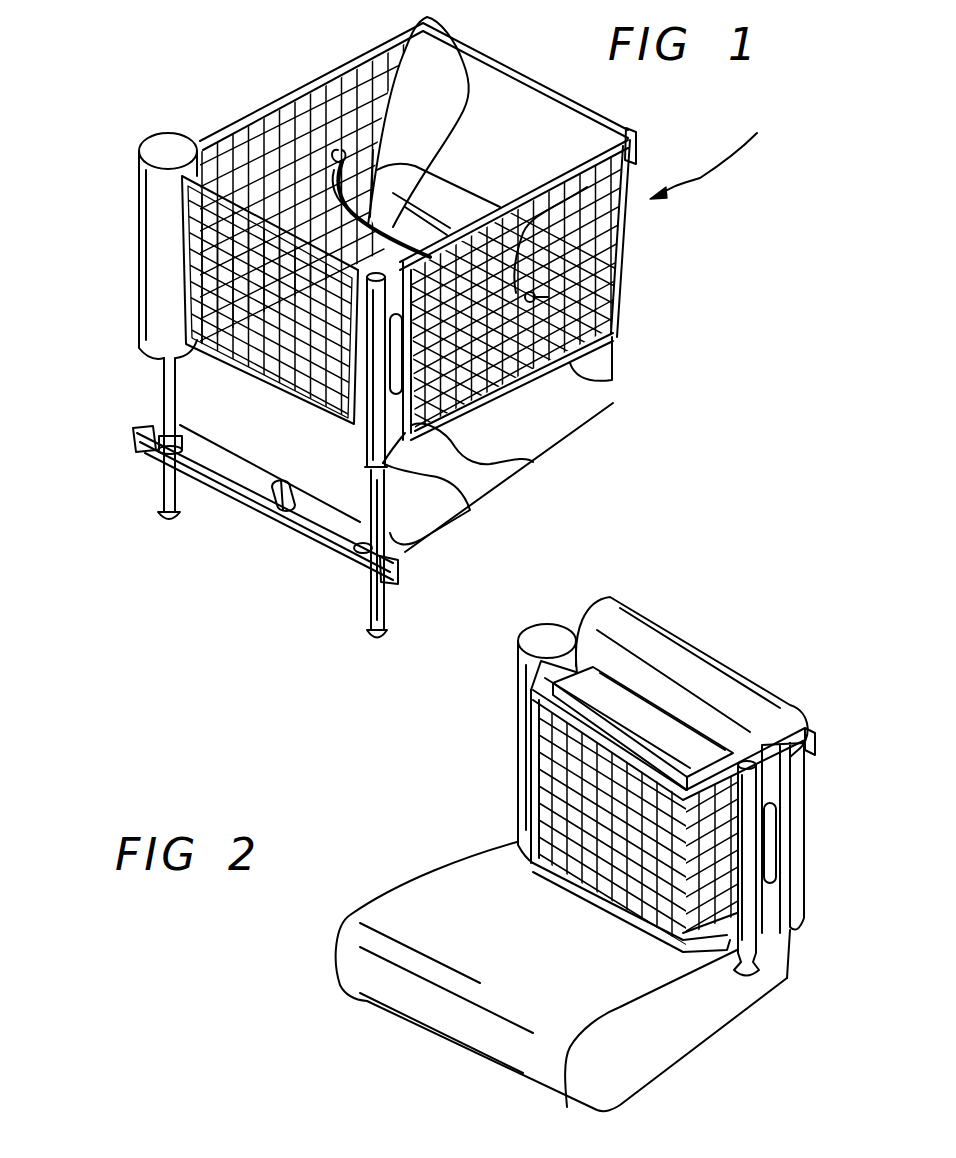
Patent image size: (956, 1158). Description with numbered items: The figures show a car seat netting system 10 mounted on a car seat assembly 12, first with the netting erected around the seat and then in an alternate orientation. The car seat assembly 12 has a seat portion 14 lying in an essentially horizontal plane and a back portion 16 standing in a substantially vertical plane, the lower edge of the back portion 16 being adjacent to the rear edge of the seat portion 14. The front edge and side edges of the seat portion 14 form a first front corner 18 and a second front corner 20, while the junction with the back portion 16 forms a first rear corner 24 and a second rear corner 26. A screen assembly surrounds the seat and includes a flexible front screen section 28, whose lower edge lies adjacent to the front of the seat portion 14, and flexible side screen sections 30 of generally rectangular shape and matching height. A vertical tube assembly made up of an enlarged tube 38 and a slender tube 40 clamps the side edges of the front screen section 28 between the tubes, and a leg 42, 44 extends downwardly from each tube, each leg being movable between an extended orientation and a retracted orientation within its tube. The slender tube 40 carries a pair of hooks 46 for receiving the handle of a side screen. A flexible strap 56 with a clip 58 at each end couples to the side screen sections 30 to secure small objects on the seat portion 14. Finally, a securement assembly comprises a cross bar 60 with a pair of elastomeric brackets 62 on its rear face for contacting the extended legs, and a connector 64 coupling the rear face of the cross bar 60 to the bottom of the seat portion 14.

In FIG. 1, the car seat netting system 10 is at (723, 157).
In FIG. 2, the car seat assembly 12 is at (784, 978).
In FIG. 2, the seat portion 14 is at (698, 1030).
In FIG. 2, the back portion 16 is at (755, 800).
In FIG. 2, the first front corner 18 is at (562, 810).
In FIG. 2, the second front corner 20 is at (560, 1090).
In FIG. 1, the first rear corner 24 is at (320, 228).
In FIG. 1, the second rear corner 26 is at (612, 381).
In FIG. 1, the front screen section 28 is at (200, 142).
In FIG. 1, the side screen sections 30 is at (398, 92).
In FIG. 1, the enlarged tube 38 is at (163, 217).
In FIG. 2, the enlarged tube 38 is at (525, 670).
In FIG. 1, the slender tube 40 is at (470, 503).
In FIG. 2, the slender tube 40 is at (747, 790).
In FIG. 1, the leg 42 is at (172, 485).
In FIG. 1, the leg 44 is at (367, 600).
In FIG. 1, the hooks 46 is at (536, 461).
In FIG. 1, the flexible strap 56 is at (498, 70).
In FIG. 1, the clip 58 is at (430, 70).
In FIG. 1, the cross bar 60 is at (245, 498).
In FIG. 1, the elastomeric bracket 62 is at (150, 445).
In FIG. 1, the connector 64 is at (290, 490).